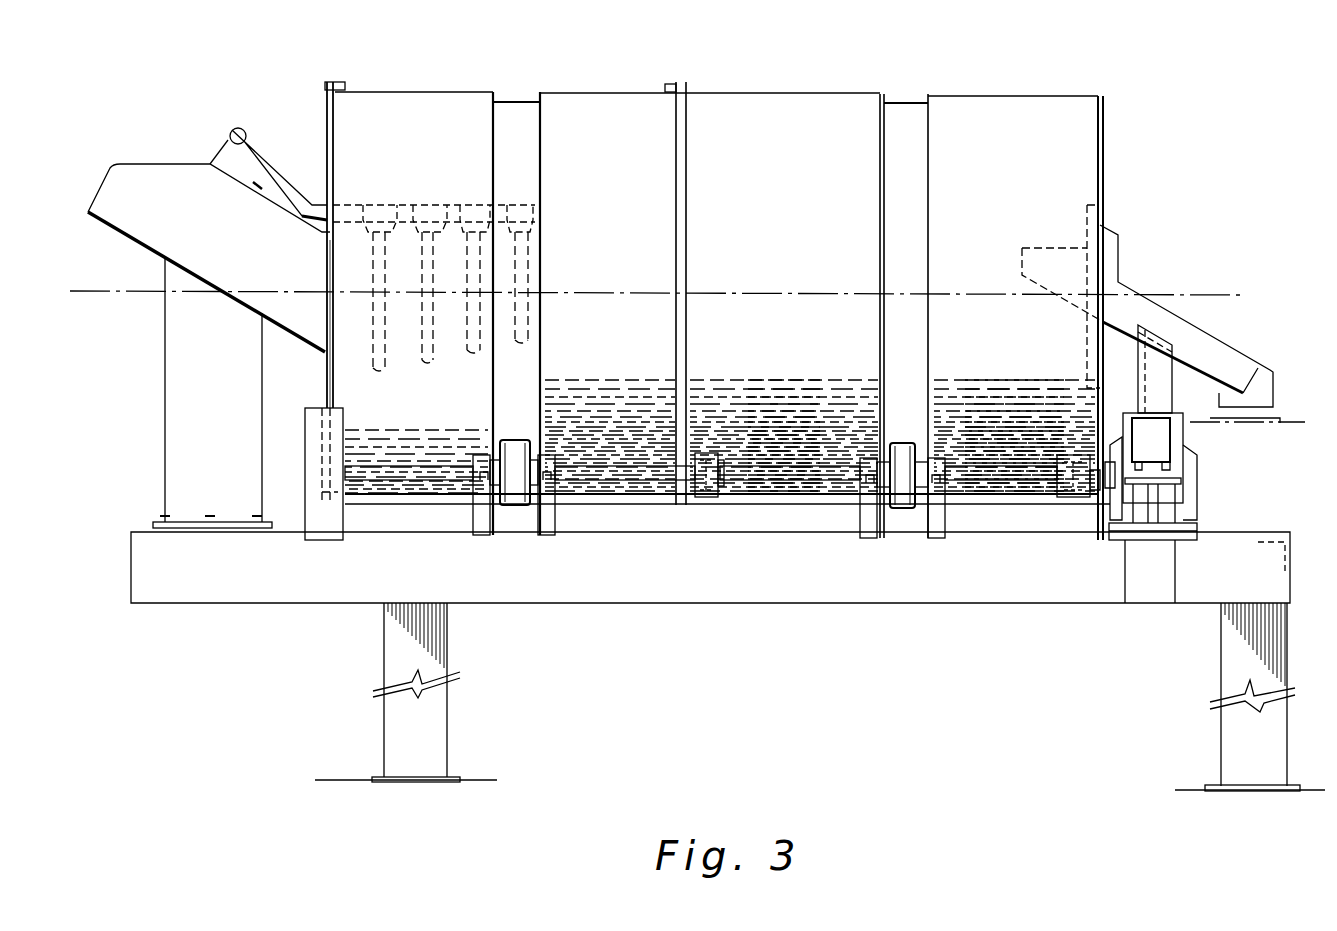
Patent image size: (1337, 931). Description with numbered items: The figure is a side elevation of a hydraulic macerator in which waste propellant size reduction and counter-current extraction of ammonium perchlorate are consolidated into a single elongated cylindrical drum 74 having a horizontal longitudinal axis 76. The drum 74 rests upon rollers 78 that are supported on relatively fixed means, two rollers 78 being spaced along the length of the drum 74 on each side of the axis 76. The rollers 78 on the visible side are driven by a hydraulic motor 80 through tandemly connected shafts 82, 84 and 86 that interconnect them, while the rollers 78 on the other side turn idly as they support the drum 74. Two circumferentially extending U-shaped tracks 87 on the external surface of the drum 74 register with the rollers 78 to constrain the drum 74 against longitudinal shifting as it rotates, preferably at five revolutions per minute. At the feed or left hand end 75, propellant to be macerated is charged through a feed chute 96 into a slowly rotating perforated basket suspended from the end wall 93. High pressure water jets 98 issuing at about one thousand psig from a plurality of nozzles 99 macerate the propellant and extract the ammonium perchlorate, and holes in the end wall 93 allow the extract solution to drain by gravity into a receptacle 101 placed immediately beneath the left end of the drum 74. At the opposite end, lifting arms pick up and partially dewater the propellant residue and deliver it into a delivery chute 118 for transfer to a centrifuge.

The cylindrical drum 74 is at (458, 92).
The U-shaped tracks 87 is at (522, 102).
The end wall 93 is at (330, 150).
The feed or left hand end 75 is at (330, 373).
The receptacle 101 is at (315, 462).
The feed chute 96 is at (146, 223).
The nozzles 99 is at (425, 205).
The high pressure water jets 98 is at (380, 372).
The horizontal longitudinal axis 76 is at (1207, 297).
The delivery chute 118 is at (1210, 340).
The hydraulic motor 80 is at (1190, 490).
The shaft 86 is at (610, 466).
The shaft 84 is at (780, 466).
The shaft 82 is at (996, 466).
The rollers 78 is at (518, 490).